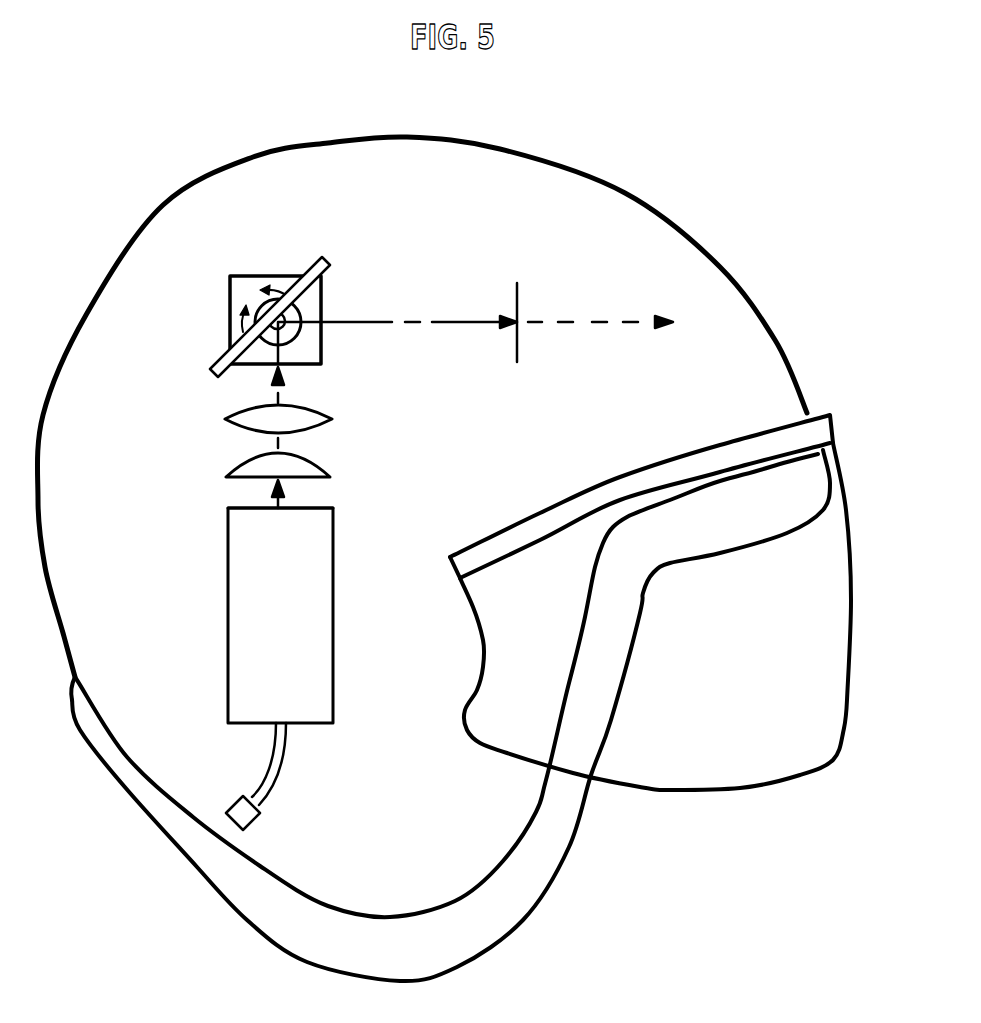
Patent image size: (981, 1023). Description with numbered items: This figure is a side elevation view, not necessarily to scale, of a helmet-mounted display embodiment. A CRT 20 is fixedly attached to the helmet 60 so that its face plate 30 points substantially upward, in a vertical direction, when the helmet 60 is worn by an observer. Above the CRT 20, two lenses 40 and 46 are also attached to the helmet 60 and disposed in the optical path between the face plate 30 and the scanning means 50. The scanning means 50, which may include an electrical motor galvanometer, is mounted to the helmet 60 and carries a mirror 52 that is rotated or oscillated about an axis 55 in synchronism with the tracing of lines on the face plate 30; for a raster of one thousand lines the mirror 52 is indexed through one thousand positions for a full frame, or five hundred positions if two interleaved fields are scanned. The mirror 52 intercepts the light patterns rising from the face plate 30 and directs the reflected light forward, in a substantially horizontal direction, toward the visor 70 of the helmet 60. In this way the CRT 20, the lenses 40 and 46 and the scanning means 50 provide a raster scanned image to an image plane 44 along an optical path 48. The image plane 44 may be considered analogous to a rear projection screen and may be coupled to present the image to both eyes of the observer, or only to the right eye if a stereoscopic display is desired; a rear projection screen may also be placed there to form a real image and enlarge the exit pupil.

The CRT 20 is at (227, 627).
The face plate 30 is at (240, 506).
The lens 40 is at (322, 465).
The image plane 44 is at (520, 293).
The lens 46 is at (224, 419).
The optical path 48 is at (368, 328).
The scanning means 50 is at (255, 274).
The mirror 52 is at (330, 262).
The axis 55 is at (260, 299).
The helmet 60 is at (727, 263).
The visor 70 is at (718, 793).